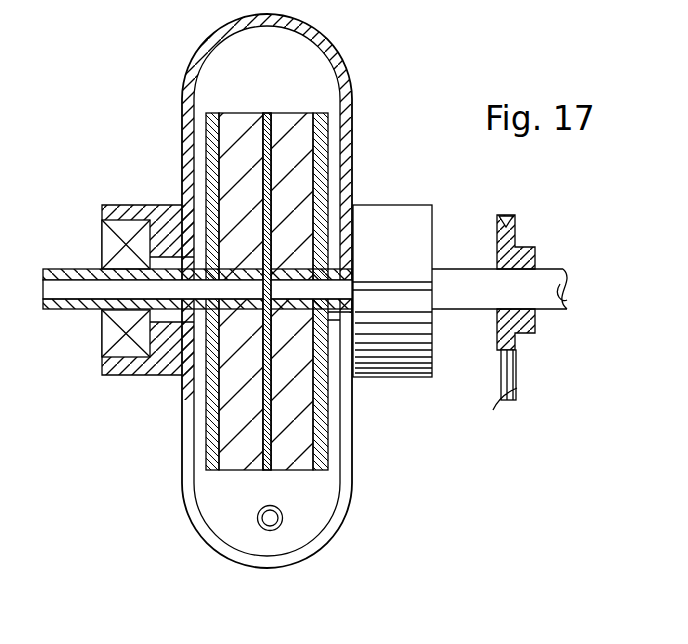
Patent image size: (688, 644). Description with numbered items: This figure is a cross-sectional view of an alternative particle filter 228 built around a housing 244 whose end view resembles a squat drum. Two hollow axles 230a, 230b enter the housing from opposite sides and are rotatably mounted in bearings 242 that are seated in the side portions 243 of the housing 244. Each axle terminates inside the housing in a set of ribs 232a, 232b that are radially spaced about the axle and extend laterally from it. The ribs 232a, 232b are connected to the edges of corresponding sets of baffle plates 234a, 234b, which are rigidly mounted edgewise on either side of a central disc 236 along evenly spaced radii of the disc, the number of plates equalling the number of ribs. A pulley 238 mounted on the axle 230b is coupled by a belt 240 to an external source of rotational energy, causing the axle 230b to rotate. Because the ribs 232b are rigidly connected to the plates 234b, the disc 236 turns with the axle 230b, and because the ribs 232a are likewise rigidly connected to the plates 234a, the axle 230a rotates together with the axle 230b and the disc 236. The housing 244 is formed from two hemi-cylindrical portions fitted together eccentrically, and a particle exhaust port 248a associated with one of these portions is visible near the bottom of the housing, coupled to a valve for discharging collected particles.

The particle filter 228 is at (147, 83).
The housing 244 is at (317, 42).
The side portions 243 is at (118, 213).
The bearing 242 is at (107, 242).
The ribs 232a is at (215, 172).
The ribs 232b is at (323, 168).
The baffle plates 234a is at (235, 117).
The baffle plates 234b is at (300, 117).
The hollow axle 230a is at (72, 312).
The hollow axle 230b is at (560, 283).
The disc 236 is at (262, 463).
The pulley 238 is at (533, 247).
The belt 240 is at (520, 390).
The particle exhaust port 248a is at (280, 522).